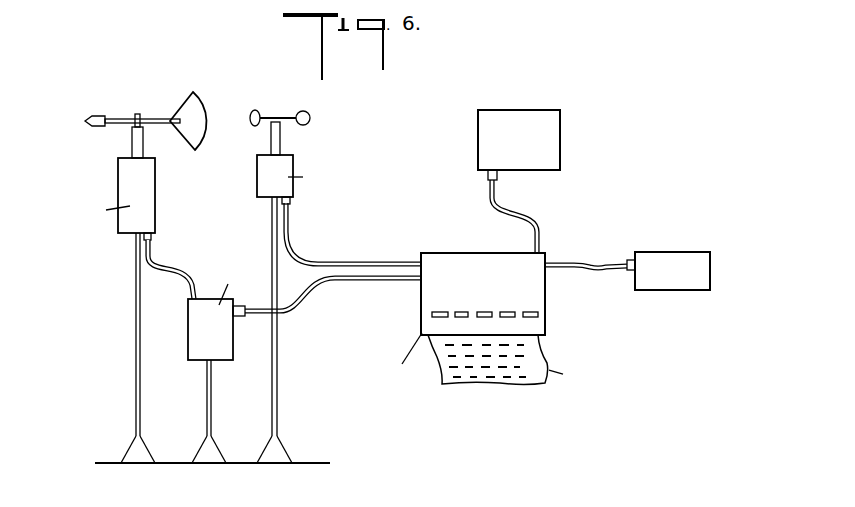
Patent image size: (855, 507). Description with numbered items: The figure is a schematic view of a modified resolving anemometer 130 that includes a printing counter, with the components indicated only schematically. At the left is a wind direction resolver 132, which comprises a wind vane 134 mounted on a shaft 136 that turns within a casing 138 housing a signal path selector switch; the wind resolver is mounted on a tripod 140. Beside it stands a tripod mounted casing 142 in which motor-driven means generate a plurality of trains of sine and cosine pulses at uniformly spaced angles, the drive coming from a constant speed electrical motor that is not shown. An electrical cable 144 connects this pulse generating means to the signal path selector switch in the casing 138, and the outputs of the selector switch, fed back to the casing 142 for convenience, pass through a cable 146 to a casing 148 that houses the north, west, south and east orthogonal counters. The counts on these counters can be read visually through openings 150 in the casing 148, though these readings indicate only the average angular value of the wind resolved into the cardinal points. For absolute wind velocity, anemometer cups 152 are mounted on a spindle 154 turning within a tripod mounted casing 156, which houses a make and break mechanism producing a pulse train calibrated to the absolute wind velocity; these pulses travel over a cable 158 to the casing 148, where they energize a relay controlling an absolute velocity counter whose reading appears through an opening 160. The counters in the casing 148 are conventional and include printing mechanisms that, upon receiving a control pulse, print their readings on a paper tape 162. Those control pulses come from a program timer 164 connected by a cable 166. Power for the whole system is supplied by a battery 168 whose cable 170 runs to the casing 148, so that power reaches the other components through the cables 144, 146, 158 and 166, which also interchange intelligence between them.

The resolving anemometer 130 is at (370, 135).
The wind direction resolver 132 is at (170, 201).
The wind vane 134 is at (121, 116).
The shaft 136 is at (132, 144).
The casing 138 is at (125, 170).
The tripod 140 is at (136, 388).
The casing 142 is at (197, 338).
The electrical cable 144 is at (173, 269).
The cable 146 is at (316, 300).
The casing 148 is at (427, 299).
The openings 150 is at (453, 341).
The anemometer cups 152 is at (310, 118).
The spindle 154 is at (281, 119).
The casing 156 is at (299, 144).
The cable 158 is at (312, 258).
The opening 160 is at (540, 314).
The paper tape 162 is at (547, 352).
The program timer 164 is at (683, 252).
The cable 166 is at (578, 263).
The battery 168 is at (576, 102).
The cable 170 is at (490, 204).